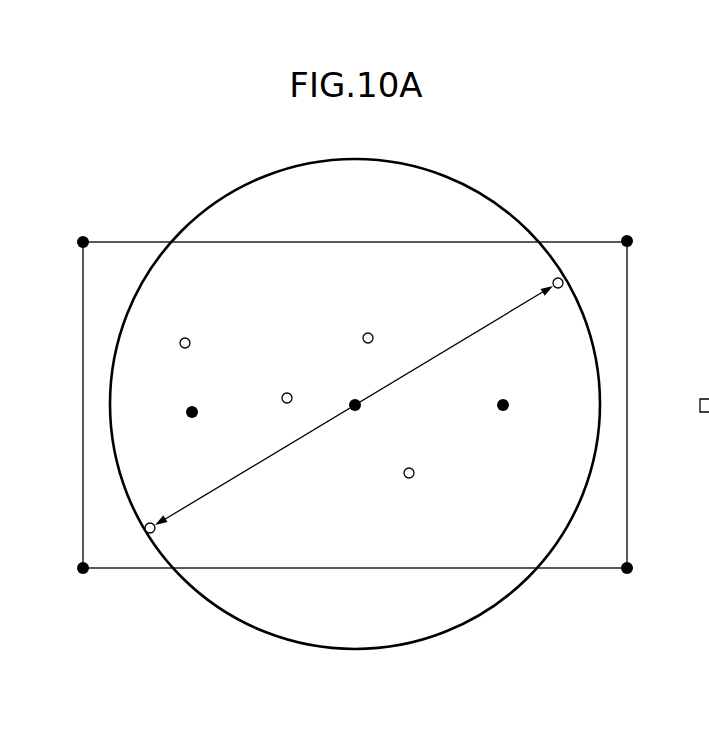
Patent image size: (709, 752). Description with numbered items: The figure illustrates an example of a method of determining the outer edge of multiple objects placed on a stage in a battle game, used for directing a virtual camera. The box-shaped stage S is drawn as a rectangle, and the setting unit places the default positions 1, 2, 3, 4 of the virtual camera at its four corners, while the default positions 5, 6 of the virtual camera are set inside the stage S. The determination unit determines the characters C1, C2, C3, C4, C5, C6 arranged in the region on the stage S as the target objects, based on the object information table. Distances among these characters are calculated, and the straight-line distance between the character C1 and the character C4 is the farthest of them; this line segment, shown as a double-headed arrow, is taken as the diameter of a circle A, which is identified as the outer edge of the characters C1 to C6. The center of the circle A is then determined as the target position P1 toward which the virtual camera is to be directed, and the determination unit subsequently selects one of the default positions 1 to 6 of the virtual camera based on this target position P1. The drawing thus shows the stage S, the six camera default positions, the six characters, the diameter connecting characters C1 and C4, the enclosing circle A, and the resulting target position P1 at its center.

The circle A is at (492, 622).
The stage S is at (562, 236).
The default position 1 is at (72, 242).
The default position 2 is at (72, 568).
The default position 3 is at (638, 568).
The default position 4 is at (638, 241).
The default position 5 is at (514, 405).
The default position 6 is at (180, 412).
The target position P1 is at (354, 430).
The character C1 is at (155, 532).
The character C2 is at (287, 393).
The character C3 is at (185, 338).
The character C4 is at (553, 282).
The character C5 is at (368, 333).
The character C6 is at (409, 478).